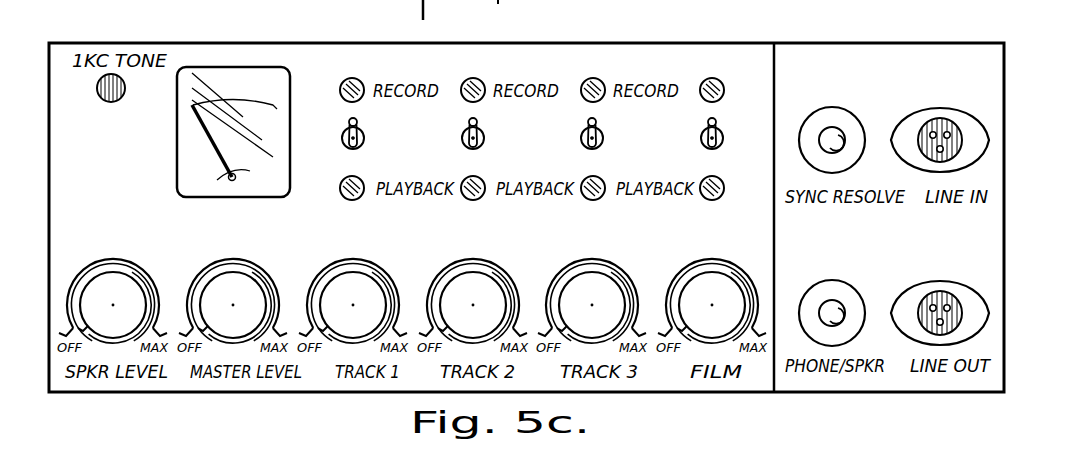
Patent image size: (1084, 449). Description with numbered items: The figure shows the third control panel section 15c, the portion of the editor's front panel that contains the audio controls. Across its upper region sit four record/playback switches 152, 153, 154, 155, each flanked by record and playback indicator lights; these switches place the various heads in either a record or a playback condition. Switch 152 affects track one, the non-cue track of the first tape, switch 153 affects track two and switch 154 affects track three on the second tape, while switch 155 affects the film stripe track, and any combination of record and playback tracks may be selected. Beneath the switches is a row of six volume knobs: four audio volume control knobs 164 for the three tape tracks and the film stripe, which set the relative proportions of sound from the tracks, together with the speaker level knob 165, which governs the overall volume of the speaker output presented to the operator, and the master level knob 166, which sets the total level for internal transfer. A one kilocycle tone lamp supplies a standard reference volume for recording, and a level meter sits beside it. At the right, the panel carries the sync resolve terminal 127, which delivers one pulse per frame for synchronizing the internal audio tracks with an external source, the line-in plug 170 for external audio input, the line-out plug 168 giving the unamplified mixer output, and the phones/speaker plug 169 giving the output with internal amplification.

The third control panel section 15c is at (910, 60).
The sync resolve terminal 127 is at (835, 112).
The record/playback switch 152 is at (364, 137).
The record/playback switch 153 is at (484, 137).
The record/playback switch 154 is at (603, 137).
The record/playback switch 155 is at (723, 137).
The audio volume control knobs 164 is at (452, 285).
The speaker level knob 165 is at (137, 292).
The master level knob 166 is at (248, 290).
The line-out plug 168 is at (938, 283).
The phones/speaker plug 169 is at (835, 285).
The line-in plug 170 is at (908, 128).